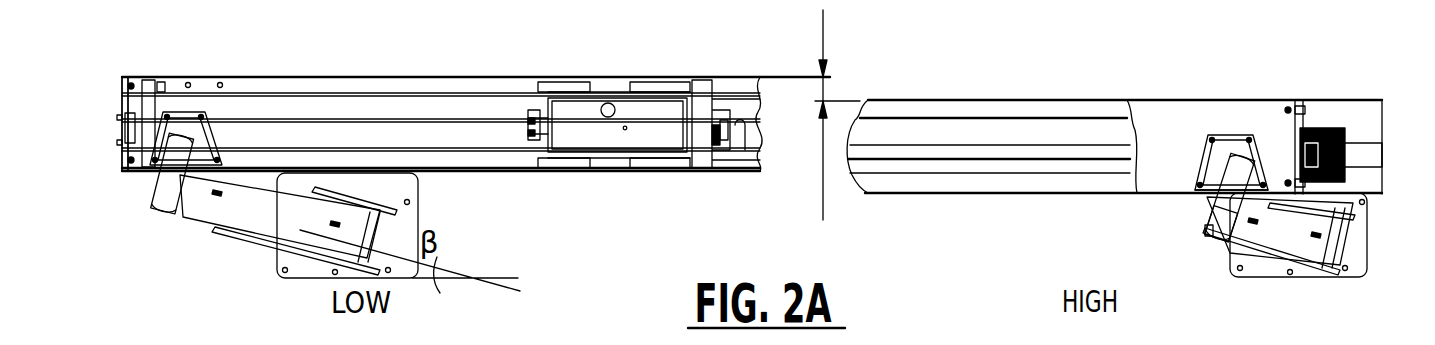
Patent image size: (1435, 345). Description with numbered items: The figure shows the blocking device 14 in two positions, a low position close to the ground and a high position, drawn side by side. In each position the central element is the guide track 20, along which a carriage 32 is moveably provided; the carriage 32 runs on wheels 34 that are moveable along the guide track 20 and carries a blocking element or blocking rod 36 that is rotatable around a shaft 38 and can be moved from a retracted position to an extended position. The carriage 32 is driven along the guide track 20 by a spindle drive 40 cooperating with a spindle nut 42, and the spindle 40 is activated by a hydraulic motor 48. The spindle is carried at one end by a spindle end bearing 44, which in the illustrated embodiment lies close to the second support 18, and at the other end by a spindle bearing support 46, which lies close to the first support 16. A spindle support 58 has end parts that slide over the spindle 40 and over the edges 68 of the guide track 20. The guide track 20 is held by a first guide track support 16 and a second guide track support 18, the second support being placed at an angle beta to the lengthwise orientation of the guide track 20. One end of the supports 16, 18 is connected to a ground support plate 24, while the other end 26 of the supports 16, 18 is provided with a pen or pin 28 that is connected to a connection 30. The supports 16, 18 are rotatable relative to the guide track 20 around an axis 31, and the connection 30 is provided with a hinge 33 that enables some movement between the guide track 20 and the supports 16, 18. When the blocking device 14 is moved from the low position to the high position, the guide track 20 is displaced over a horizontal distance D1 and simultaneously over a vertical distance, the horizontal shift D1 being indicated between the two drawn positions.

The blocking device 14 is at (982, 208).
The first guide track support 16 is at (1320, 240).
The second guide track support 18 is at (302, 230).
The guide track 20 is at (357, 87).
The ground support plate 24 is at (398, 183).
The other end of supports 26 is at (147, 218).
The pin 28 is at (1213, 213).
The connection 30 is at (1243, 123).
The axis 31 is at (380, 233).
The carriage 32 is at (637, 115).
The hinge 33 is at (1205, 127).
The wheels 34 is at (562, 88).
The blocking rod 36 is at (735, 113).
The shaft 38 is at (608, 117).
The spindle drive 40 is at (1063, 157).
The spindle nut 42 is at (538, 137).
The spindle end bearing 44 is at (113, 105).
The spindle bearing support 46 is at (1315, 95).
The hydraulic motor 48 is at (1340, 155).
The spindle support 58 is at (247, 113).
The edges of guide track 68 is at (1020, 100).
The horizontal distance D1 is at (822, 115).